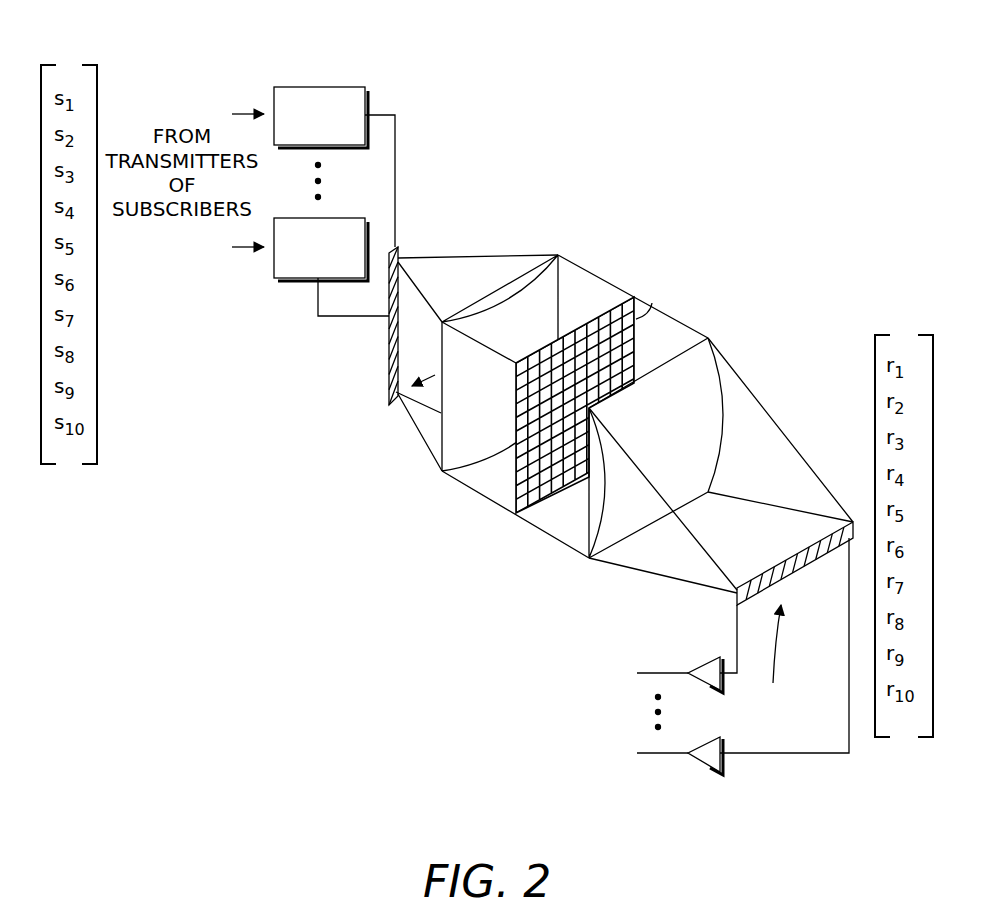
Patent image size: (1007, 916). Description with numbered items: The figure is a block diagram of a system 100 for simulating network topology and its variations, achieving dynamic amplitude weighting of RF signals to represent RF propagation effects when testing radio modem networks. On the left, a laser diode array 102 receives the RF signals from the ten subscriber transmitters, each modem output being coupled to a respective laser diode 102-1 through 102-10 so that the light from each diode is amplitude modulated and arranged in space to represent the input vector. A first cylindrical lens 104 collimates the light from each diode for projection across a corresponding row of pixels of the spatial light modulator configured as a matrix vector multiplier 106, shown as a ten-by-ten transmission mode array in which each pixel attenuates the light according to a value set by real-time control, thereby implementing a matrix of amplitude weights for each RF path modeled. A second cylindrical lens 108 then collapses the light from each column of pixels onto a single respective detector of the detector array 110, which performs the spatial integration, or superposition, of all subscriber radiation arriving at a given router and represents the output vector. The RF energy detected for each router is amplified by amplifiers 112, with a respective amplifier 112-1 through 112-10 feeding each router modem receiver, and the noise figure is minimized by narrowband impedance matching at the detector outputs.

The system 100 is at (760, 137).
The laser diode array 102 is at (312, 202).
The laser diode 102-1 is at (362, 87).
The laser diode 102-10 is at (290, 282).
The first cylindrical lens 104 is at (576, 263).
The spatial light modulator configured as matrix vector multiplier 106 is at (660, 271).
The second cylindrical lens 108 is at (738, 431).
The detector array 110 is at (827, 560).
The amplifiers 112 is at (665, 665).
The amplifier 112-1 is at (707, 658).
The amplifier 112-10 is at (703, 768).